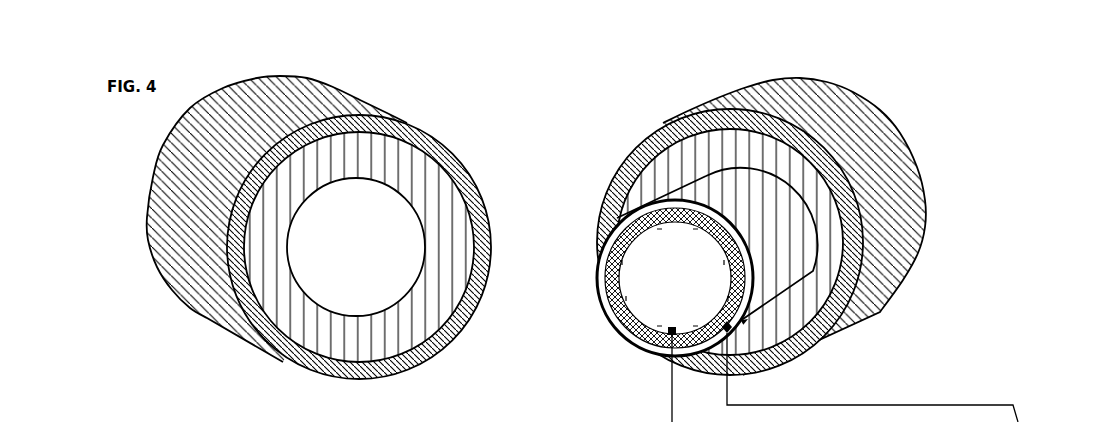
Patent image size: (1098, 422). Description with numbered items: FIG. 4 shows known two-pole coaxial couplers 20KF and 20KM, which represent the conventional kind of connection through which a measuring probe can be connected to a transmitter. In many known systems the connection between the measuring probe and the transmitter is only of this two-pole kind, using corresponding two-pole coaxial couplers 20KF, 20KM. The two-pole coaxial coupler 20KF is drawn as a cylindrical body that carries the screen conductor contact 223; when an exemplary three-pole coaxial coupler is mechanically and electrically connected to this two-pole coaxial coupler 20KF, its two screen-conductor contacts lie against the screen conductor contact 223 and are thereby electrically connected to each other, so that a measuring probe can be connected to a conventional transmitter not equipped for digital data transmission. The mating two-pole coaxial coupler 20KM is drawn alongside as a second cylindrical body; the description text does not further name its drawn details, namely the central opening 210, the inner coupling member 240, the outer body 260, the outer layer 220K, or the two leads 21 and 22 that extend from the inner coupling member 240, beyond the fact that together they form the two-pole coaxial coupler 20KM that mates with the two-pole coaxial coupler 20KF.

The two-pole coaxial coupler 20KF is at (435, 247).
The two-pole coaxial coupler 20KM is at (814, 250).
The central bore 210 is at (337, 268).
The screen conductor contact 223 is at (443, 237).
The inner connector assembly 240 is at (597, 298).
The outer conductor body 260 is at (883, 182).
The outer jacket 220K is at (900, 390).
The first lead wire 21 is at (827, 374).
The second lead wire 22 is at (882, 371).